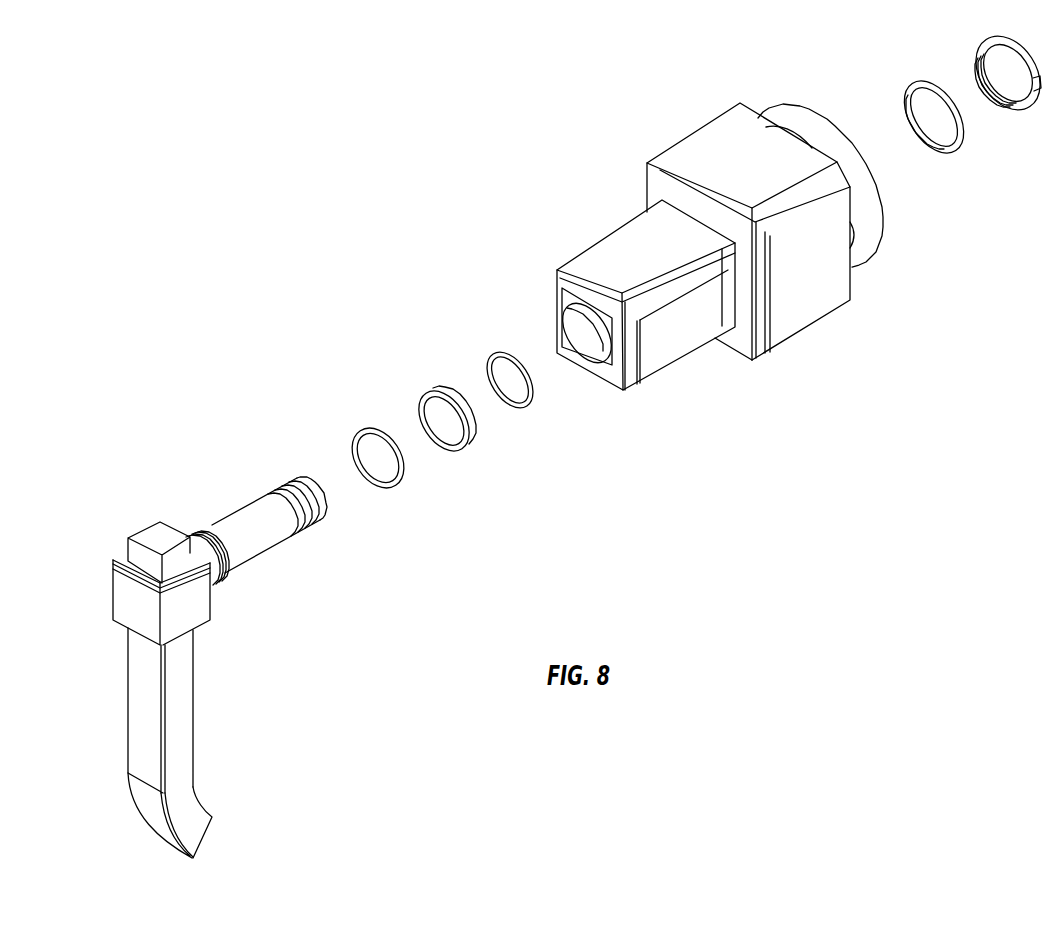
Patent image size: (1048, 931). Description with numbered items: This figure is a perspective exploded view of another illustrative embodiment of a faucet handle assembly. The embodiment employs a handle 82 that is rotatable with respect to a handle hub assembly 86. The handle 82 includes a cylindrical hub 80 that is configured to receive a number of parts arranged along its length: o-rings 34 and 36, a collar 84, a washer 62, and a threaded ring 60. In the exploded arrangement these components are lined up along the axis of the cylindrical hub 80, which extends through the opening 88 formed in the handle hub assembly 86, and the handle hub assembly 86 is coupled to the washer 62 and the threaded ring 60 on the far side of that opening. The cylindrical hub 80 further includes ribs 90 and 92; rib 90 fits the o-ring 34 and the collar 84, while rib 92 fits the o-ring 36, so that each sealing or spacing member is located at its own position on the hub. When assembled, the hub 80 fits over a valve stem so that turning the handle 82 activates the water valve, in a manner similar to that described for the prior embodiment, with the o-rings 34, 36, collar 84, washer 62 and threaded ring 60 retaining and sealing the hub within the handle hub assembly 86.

The o-ring 34 is at (362, 428).
The o-ring 36 is at (497, 353).
The threaded ring 60 is at (998, 38).
The washer 62 is at (918, 87).
The cylindrical hub 80 is at (242, 517).
The handle 82 is at (195, 727).
The collar 84 is at (445, 385).
The handle hub assembly 86 is at (619, 131).
The opening 88 is at (591, 349).
The rib 90 is at (218, 605).
The rib 92 is at (318, 541).